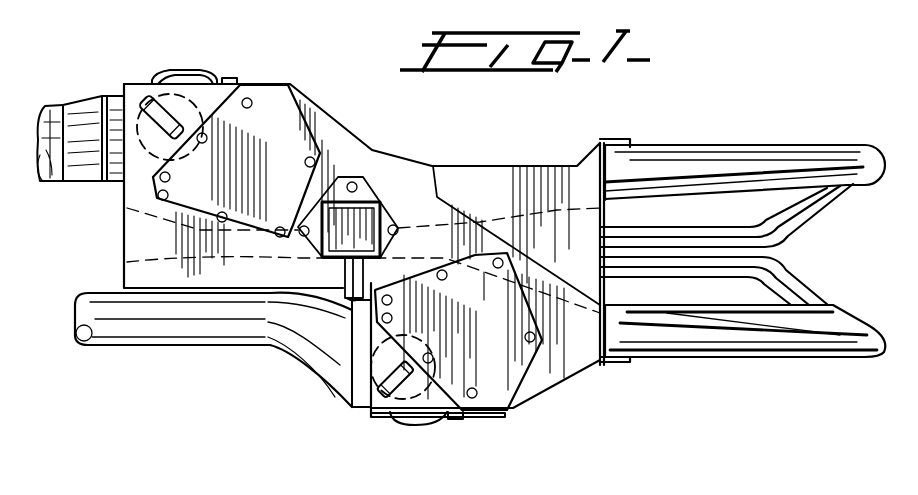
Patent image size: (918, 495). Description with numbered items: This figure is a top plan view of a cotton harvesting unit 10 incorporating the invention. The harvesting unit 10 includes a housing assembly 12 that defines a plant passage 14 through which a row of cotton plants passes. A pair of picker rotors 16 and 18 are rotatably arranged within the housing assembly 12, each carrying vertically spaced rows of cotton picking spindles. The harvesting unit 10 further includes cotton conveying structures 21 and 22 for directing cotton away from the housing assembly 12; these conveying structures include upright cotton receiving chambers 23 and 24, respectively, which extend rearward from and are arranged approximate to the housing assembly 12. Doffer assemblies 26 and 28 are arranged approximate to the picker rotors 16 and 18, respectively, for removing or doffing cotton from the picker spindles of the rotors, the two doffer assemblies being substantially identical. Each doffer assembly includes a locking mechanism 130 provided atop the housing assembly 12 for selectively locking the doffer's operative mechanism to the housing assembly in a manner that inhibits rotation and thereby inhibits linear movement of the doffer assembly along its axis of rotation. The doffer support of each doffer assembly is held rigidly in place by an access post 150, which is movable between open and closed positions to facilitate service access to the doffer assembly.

The harvesting unit 10 is at (716, 116).
The housing assembly 12 is at (410, 148).
The plant passage 14 is at (575, 212).
The picker rotor 16 is at (479, 333).
The picker rotor 18 is at (265, 177).
The cotton conveying structure 21 is at (310, 388).
The cotton conveying structure 22 is at (84, 192).
The cotton receiving chamber 23 is at (362, 406).
The cotton receiving chamber 24 is at (114, 190).
The doffer assembly 26 is at (426, 408).
The doffer assembly 28 is at (202, 92).
The locking mechanism 130 is at (138, 127).
The access post 150 is at (175, 62).